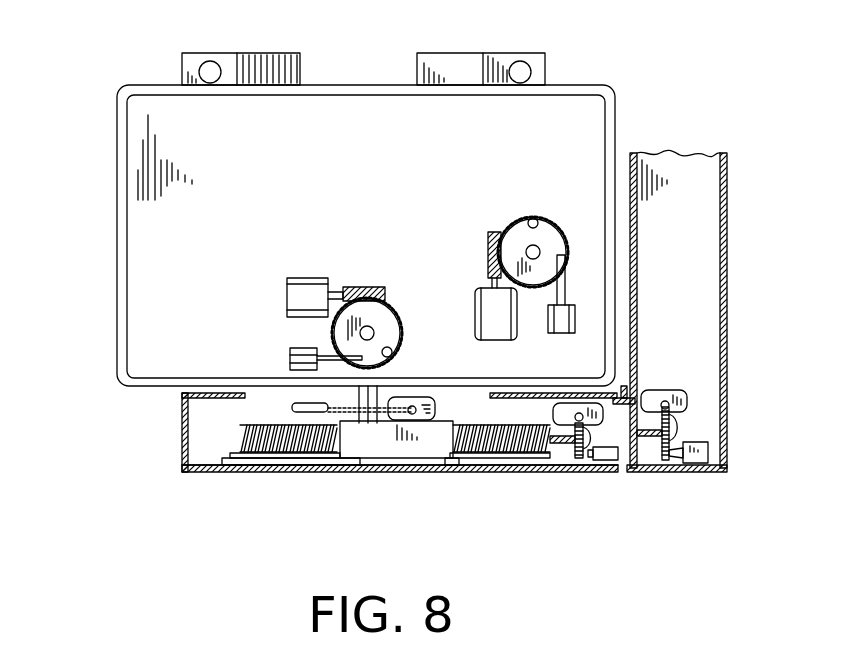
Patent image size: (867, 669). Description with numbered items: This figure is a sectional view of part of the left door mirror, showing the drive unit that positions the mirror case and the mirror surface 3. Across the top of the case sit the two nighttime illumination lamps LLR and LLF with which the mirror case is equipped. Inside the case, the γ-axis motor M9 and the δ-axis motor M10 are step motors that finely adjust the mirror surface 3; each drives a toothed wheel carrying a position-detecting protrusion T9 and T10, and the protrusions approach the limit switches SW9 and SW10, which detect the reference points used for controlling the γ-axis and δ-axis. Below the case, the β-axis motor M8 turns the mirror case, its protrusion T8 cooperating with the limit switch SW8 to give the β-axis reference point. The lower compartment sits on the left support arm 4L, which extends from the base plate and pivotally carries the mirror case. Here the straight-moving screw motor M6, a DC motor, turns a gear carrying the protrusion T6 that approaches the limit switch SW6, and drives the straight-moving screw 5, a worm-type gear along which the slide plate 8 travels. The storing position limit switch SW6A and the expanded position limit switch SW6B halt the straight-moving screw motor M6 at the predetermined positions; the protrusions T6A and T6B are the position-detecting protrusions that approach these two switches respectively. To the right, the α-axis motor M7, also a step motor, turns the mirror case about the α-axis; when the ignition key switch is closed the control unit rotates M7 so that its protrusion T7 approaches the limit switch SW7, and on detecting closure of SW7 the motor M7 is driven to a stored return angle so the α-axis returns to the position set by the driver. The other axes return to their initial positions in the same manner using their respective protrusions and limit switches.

The nighttime illumination lamp LLR is at (224, 54).
The nighttime illumination lamp LLF is at (501, 54).
The mirror surface 3 is at (266, 171).
The protrusion T10 is at (533, 218).
The γ-axis motor M9 is at (287, 290).
The protrusion T9 is at (393, 333).
The limit switch SW9 is at (290, 357).
The δ-axis motor M10 is at (484, 341).
The limit switch SW10 is at (576, 336).
The β-axis motor M8 is at (435, 410).
The protrusion T8 is at (361, 423).
The limit switch SW8 is at (292, 407).
The straight-moving screw 5 is at (286, 452).
The protrusion T6A is at (337, 463).
The storing position limit switch SW6A is at (235, 473).
The slide plate 8 is at (417, 447).
The protrusion T6B is at (437, 458).
The expanded position limit switch SW6B is at (457, 468).
The support arm 4L is at (543, 473).
The straight-moving screw motor M6 is at (558, 403).
The protrusion T6 is at (637, 450).
The limit switch SW6 is at (597, 462).
The α-axis motor M7 is at (655, 390).
The protrusion T7 is at (672, 425).
The limit switch SW7 is at (693, 463).